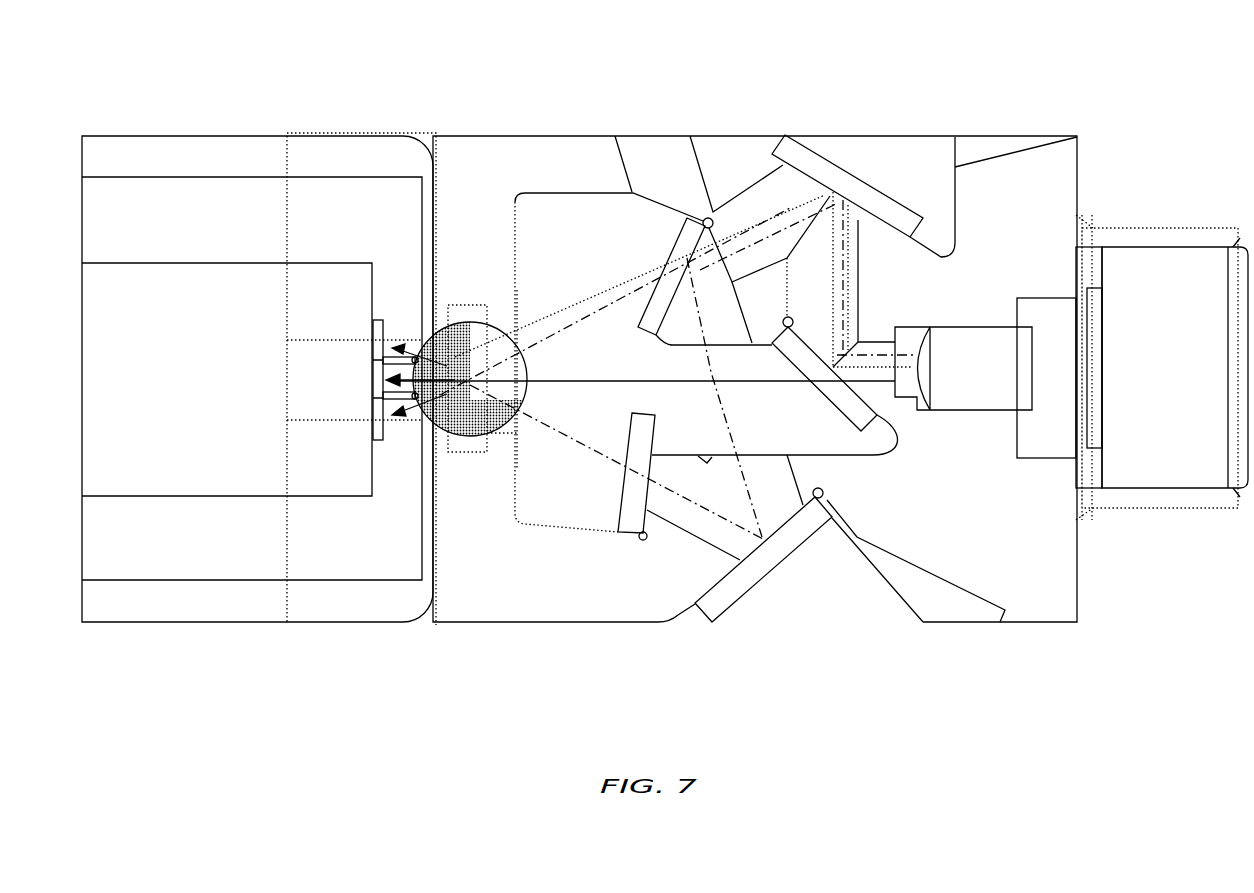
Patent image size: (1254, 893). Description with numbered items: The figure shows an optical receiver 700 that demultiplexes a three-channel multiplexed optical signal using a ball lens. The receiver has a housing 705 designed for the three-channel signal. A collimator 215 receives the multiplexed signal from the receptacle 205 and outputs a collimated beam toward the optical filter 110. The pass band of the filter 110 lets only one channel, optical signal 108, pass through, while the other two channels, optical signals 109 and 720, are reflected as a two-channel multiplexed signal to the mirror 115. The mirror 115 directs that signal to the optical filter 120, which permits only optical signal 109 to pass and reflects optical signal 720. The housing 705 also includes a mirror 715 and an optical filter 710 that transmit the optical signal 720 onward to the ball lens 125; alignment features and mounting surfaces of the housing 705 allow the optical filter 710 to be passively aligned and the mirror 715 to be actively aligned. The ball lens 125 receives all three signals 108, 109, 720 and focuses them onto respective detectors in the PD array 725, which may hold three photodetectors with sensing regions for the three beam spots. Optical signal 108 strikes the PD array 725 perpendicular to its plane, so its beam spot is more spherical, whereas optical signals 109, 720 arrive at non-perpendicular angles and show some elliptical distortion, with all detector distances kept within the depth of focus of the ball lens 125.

The optical receiver 700 is at (910, 40).
The housing 705 is at (1040, 137).
The PD array 725 is at (378, 304).
The ball lens 125 is at (468, 322).
The mirror 115 is at (854, 174).
The optical filter 120 is at (668, 262).
The optical filter 110 is at (873, 455).
The optical filter 710 is at (628, 428).
The mirror 715 is at (772, 568).
The collimator 215 is at (988, 327).
The receptacle 205 is at (1168, 247).
The optical signal 109 is at (600, 308).
The optical signal 108 is at (740, 385).
The optical signal 720 is at (597, 455).